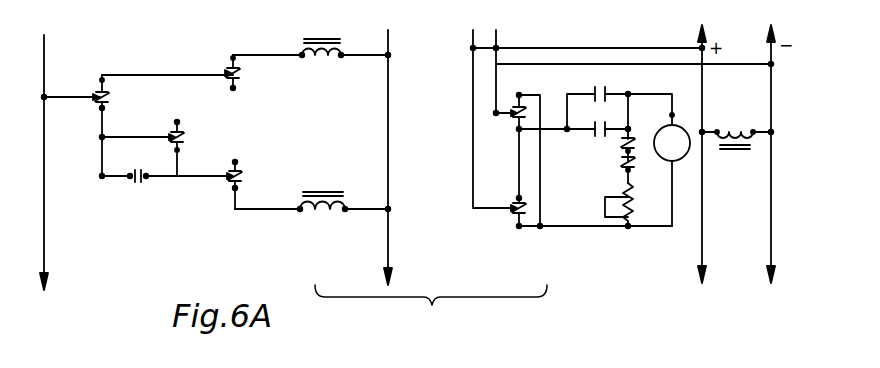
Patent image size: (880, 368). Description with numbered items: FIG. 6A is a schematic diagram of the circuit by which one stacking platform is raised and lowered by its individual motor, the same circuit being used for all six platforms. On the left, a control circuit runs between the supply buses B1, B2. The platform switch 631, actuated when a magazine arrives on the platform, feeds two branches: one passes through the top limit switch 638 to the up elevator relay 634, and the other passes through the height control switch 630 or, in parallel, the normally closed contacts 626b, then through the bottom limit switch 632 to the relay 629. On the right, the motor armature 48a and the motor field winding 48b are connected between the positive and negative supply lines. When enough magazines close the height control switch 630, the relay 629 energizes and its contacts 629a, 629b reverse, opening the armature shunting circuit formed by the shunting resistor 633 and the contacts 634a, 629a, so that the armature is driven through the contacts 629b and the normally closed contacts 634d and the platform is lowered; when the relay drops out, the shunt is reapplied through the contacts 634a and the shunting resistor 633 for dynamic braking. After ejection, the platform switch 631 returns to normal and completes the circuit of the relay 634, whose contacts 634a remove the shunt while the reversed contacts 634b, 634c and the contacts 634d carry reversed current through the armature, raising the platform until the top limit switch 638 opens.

The supply bus B1 is at (44, 59).
The supply bus B2 is at (388, 70).
The platform switch 631 is at (116, 99).
The height control switch 630 is at (186, 137).
The normally closed contacts of relay 626 626b is at (138, 188).
The top limit switch 638 is at (226, 71).
The up elevator relay 634 is at (313, 62).
The bottom limit switch 632 is at (222, 179).
The relay 629 is at (315, 216).
The contacts of relay 634 634b is at (514, 92).
The normally closed contacts of relay 634 634d is at (512, 216).
The contacts of relay 634 634c is at (604, 91).
The contacts of relay 629 629b is at (604, 119).
The contacts of relay 629 629a is at (621, 146).
The normally closed contacts of relay 634 634a is at (621, 163).
The shunting resistor 633 is at (631, 194).
The motor armature 48a is at (688, 157).
The motor field winding 48b is at (719, 105).